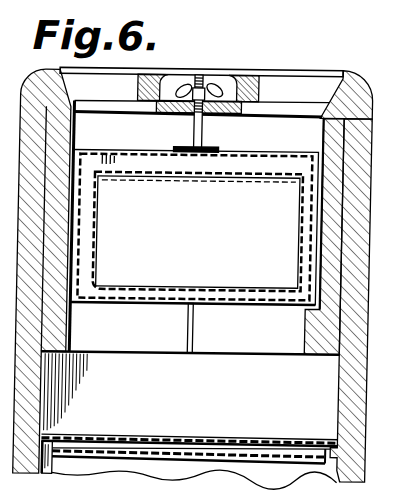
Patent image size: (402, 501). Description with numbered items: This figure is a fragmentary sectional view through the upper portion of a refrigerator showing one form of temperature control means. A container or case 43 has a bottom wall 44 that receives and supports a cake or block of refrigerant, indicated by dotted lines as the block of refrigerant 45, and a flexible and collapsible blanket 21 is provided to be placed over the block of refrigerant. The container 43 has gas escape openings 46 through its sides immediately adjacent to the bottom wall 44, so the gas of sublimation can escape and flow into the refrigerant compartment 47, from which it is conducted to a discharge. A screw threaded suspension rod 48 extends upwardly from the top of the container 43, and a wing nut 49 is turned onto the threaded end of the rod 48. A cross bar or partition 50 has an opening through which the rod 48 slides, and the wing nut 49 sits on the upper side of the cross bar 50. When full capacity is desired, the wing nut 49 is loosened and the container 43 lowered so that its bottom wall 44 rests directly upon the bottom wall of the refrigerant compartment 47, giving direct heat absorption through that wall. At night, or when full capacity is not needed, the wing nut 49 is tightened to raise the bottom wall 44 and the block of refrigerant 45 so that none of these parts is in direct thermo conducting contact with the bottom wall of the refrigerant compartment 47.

The blanket 21 is at (266, 175).
The container 43 is at (201, 127).
The bottom wall 44 is at (194, 227).
The block of refrigerant 45 is at (99, 229).
The gas escape openings 46 is at (192, 328).
The refrigerant compartment 47 is at (340, 80).
The suspension rod 48 is at (190, 128).
The wing nut 49 is at (203, 73).
The cross bar 50 is at (254, 110).